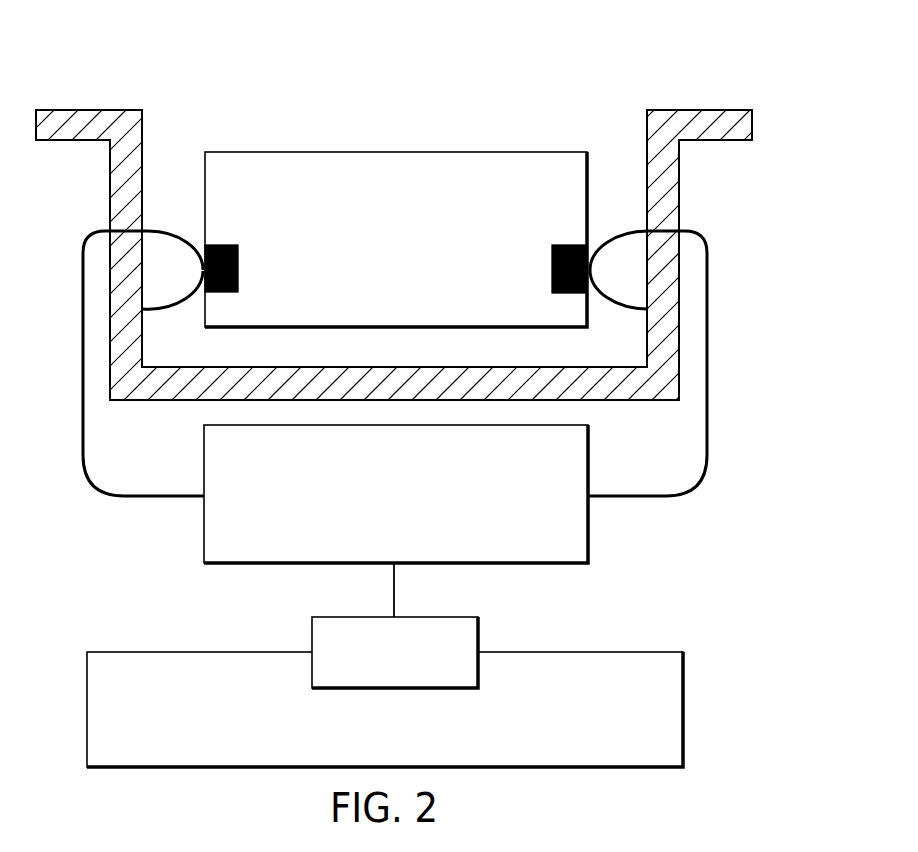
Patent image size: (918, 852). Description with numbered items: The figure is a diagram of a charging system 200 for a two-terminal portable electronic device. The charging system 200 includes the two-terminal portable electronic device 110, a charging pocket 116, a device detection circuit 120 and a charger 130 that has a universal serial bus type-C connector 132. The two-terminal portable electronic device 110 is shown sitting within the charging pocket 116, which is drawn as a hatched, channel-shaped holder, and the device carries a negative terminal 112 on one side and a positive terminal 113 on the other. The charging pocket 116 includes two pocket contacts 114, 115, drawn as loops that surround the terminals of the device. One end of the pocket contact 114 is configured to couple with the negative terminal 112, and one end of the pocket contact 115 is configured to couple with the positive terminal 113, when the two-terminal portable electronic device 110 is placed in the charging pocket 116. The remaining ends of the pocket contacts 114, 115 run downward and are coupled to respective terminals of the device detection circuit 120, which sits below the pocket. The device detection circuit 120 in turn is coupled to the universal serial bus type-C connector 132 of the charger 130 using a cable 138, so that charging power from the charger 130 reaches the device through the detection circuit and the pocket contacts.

The charging system 200 is at (622, 71).
The two-terminal portable electronic device 110 is at (392, 151).
The negative terminal 112 is at (240, 270).
The positive terminal 113 is at (551, 269).
The pocket contact 114 is at (82, 348).
The pocket contact 115 is at (708, 347).
The charging pocket 116 is at (753, 125).
The device detection circuit 120 is at (203, 527).
The charger 130 is at (86, 708).
The universal serial bus type-C connector 132 is at (311, 634).
The cable 138 is at (393, 595).